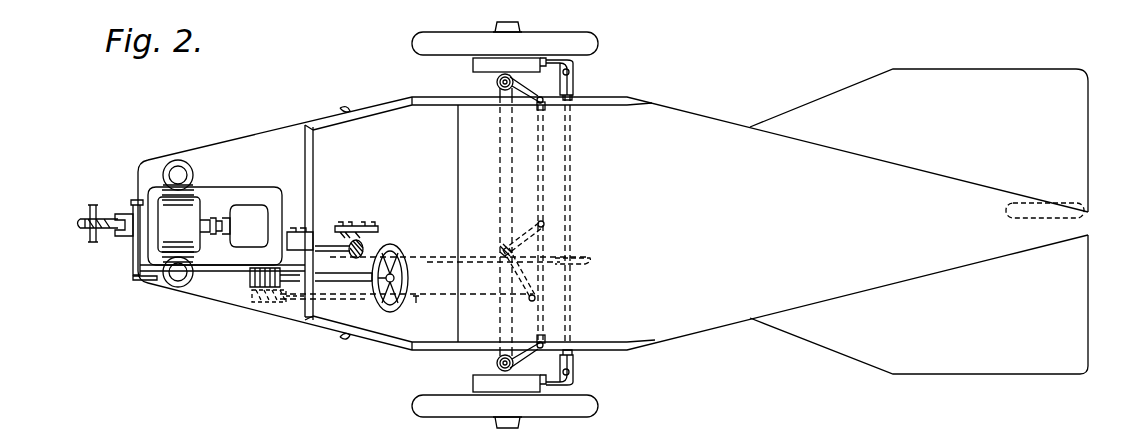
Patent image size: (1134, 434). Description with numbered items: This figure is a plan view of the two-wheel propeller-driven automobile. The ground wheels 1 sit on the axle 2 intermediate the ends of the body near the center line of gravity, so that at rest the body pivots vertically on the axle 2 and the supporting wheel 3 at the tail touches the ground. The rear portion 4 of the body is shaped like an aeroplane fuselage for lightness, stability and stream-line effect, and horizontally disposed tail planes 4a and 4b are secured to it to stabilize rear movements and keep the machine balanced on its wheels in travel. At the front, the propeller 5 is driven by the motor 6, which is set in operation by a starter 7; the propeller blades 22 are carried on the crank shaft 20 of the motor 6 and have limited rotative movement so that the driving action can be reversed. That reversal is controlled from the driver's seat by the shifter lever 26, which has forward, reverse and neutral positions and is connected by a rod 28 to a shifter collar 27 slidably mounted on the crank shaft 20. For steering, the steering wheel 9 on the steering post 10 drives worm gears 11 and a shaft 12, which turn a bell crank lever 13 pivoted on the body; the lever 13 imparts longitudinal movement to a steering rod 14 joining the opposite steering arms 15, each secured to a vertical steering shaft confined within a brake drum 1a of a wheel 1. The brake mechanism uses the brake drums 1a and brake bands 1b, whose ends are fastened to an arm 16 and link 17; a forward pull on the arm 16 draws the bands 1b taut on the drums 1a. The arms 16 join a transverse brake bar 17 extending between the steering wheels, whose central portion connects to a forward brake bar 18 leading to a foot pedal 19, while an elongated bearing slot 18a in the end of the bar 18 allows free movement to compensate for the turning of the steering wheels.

The ground wheel 1 is at (596, 37).
The brake drum 1a is at (473, 383).
The brake band 1b is at (480, 57).
The axle 2 is at (496, 92).
The supporting wheel 3 is at (1090, 212).
The rear portion of the body 4 is at (720, 138).
The tail plane 4a is at (902, 80).
The tail plane 4b is at (878, 362).
The propeller 5 is at (80, 226).
The motor 6 is at (205, 187).
The starter 7 is at (248, 204).
The steering wheel 9 is at (388, 247).
The steering post 10 is at (342, 279).
The worm gears 11 is at (253, 288).
The shaft 12 is at (407, 297).
The bell crank lever 13 is at (545, 235).
The steering rod 14 is at (543, 194).
The steering arm 15 is at (530, 98).
The arm 16 is at (570, 66).
The brake bar 17 is at (567, 161).
The brake bar 18 is at (438, 257).
The elongated bearing slot 18a is at (557, 262).
The foot pedal 19 is at (362, 243).
The crank shaft 20 is at (125, 214).
The propeller blade 22 is at (82, 238).
The shifter lever 26 is at (357, 222).
The shifter collar 27 is at (130, 243).
The rod 28 is at (209, 273).